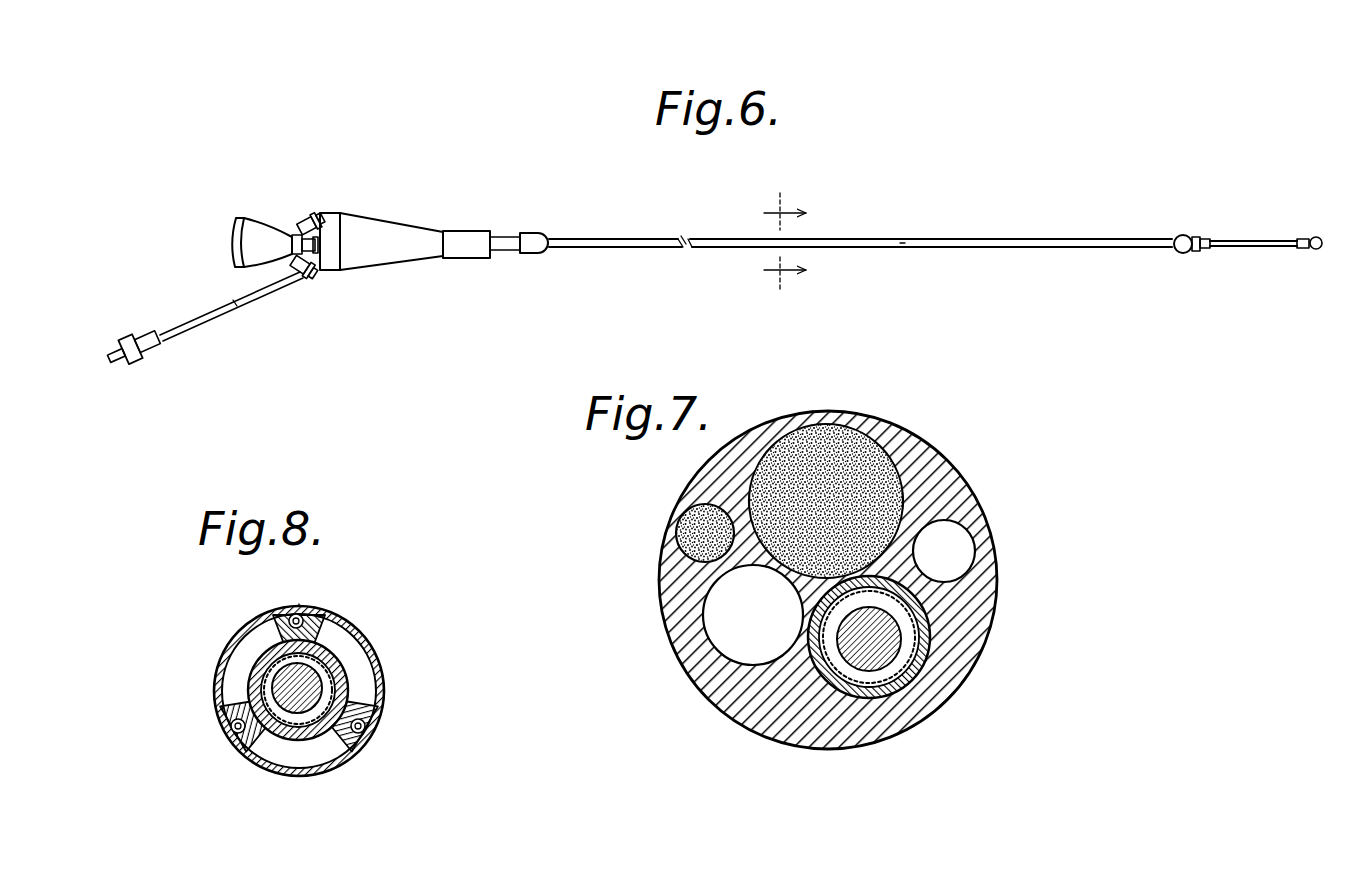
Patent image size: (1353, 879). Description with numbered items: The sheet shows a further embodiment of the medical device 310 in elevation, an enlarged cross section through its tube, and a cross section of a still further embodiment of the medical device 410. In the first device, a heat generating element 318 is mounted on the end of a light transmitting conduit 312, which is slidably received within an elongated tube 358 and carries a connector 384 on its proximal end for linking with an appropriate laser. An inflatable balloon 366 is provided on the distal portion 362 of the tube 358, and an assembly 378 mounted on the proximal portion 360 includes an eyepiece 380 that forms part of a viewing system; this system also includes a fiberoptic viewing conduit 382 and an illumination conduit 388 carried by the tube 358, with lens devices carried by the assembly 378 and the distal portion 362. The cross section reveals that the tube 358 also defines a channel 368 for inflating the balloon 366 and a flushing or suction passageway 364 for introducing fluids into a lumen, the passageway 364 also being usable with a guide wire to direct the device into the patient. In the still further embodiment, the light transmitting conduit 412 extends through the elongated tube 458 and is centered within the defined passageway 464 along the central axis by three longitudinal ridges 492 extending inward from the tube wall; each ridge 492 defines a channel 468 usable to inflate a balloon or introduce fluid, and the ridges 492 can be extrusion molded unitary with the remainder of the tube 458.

In FIG. 6, the medical device 310 is at (934, 263).
In FIG. 6, the light transmitting conduit 312 is at (1246, 247).
In FIG. 7, the light transmitting conduit 312 is at (932, 637).
In FIG. 6, the heat generating element 318 is at (1310, 250).
In FIG. 6, the elongated tube 358 is at (890, 239).
In FIG. 7, the elongated tube 358 is at (966, 474).
In FIG. 6, the proximal portion 360 is at (551, 233).
In FIG. 6, the distal portion 362 is at (1201, 237).
In FIG. 7, the flushing or suction passageway 364 is at (716, 611).
In FIG. 6, the inflatable balloon 366 is at (1179, 236).
In FIG. 7, the channel 368 is at (963, 540).
In FIG. 6, the assembly 378 is at (398, 217).
In FIG. 6, the eyepiece 380 is at (256, 229).
In FIG. 7, the fiberoptic viewing conduit 382 is at (862, 455).
In FIG. 6, the connector 384 is at (132, 364).
In FIG. 7, the illumination conduit 388 is at (680, 537).
In FIG. 8, the medical device 410 is at (323, 594).
In FIG. 8, the light transmitting conduit 412 is at (318, 656).
In FIG. 8, the elongated tube 458 is at (370, 645).
In FIG. 8, the passageway 464 is at (366, 678).
In FIG. 8, the channel 468 is at (286, 618).
In FIG. 8, the longitudinal ridges 492 is at (222, 700).